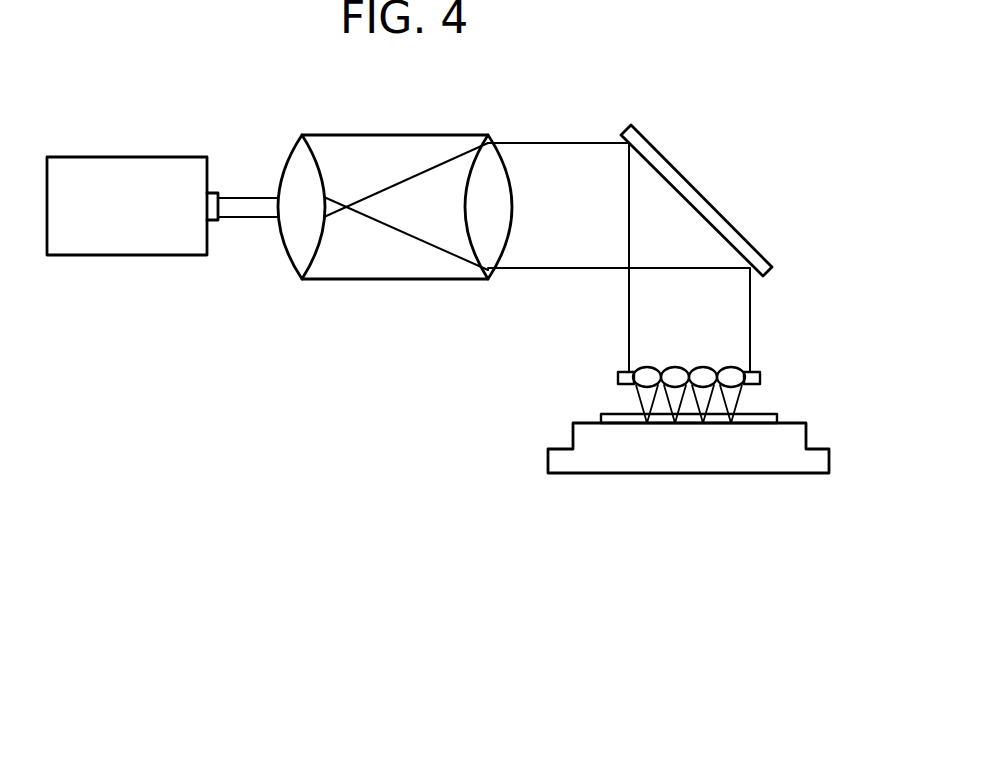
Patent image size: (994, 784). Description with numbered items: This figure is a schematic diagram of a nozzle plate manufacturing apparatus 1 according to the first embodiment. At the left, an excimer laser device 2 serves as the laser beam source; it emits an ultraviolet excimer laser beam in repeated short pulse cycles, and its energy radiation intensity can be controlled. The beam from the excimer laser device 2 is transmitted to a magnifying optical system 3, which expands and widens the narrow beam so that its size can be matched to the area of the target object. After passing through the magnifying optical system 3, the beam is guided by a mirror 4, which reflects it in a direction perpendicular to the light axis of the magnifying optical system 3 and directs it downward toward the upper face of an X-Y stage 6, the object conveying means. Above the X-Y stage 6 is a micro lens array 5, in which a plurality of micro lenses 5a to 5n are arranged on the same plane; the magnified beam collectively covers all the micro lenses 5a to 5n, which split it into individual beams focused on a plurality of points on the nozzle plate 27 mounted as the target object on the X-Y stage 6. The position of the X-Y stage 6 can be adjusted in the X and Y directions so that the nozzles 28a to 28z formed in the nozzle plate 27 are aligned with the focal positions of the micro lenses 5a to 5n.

The nozzle plate manufacturing apparatus 1 is at (90, 389).
The excimer laser device 2 is at (127, 255).
The magnifying optical system 3 is at (402, 279).
The mirror 4 is at (703, 195).
The micro lens array 5 is at (721, 340).
The micro lens 5a is at (647, 370).
The micro lens 5n is at (730, 370).
The X-Y stage 6 is at (797, 434).
The nozzle plate 27 is at (772, 419).
The nozzle 28a is at (647, 423).
The nozzle 28z is at (732, 423).